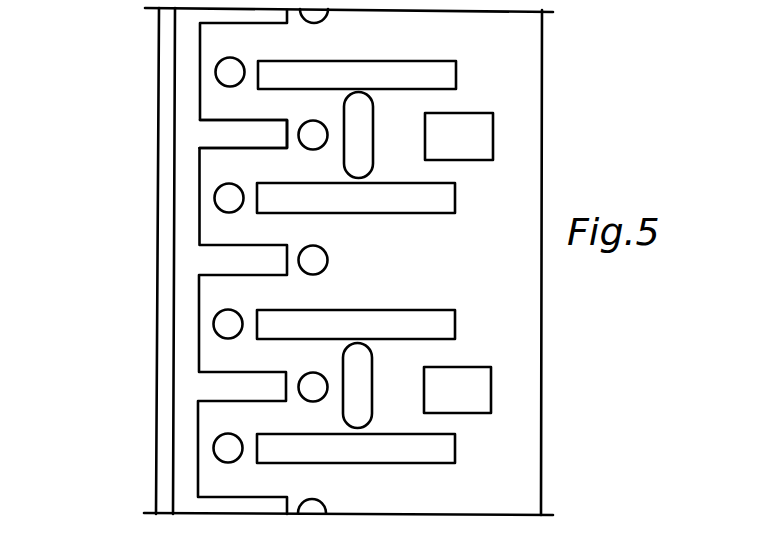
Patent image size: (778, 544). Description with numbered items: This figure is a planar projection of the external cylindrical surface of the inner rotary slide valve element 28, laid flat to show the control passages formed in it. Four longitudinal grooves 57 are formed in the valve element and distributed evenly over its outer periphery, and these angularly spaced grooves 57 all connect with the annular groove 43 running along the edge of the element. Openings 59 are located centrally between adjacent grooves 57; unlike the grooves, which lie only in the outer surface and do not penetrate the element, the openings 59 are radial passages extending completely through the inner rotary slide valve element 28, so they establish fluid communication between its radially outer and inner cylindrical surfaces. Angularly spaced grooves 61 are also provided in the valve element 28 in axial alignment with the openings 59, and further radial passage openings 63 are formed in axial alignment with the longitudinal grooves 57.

The inner rotary slide valve element 28 is at (504, 73).
The annular groove 43 is at (193, 74).
The longitudinal grooves 57 is at (220, 137).
The openings 59 is at (229, 198).
The grooves 61 is at (438, 203).
The radial passage openings 63 is at (316, 262).